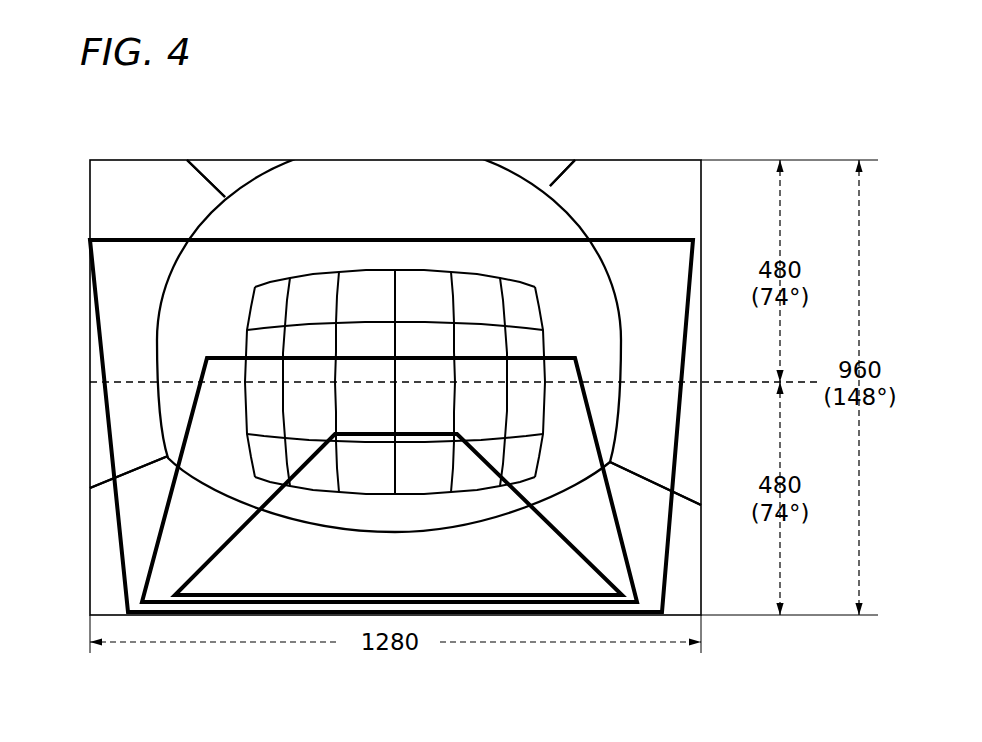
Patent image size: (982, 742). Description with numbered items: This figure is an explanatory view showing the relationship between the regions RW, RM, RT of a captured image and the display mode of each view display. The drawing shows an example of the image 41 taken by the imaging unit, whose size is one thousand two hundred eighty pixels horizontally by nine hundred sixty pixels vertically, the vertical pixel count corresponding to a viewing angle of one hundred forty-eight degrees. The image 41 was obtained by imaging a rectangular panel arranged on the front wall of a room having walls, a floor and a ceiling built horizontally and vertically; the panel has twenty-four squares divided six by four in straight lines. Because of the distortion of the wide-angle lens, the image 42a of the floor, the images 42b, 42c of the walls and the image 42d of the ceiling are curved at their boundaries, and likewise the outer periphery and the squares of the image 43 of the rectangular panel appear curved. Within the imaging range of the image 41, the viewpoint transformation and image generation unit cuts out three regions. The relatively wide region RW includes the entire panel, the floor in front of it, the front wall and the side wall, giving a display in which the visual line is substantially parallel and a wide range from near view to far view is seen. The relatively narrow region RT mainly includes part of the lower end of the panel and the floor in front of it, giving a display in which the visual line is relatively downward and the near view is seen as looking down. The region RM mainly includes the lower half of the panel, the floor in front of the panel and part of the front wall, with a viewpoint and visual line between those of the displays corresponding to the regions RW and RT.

The image 41 is at (393, 160).
The image of the floor 42a is at (280, 590).
The image of the wall 42b is at (150, 285).
The image of the wall 42c is at (320, 195).
The image of the ceiling 42d is at (548, 176).
The image of the rectangular panel 43 is at (471, 274).
The region RW is at (105, 421).
The region RM is at (165, 514).
The region RT is at (185, 590).